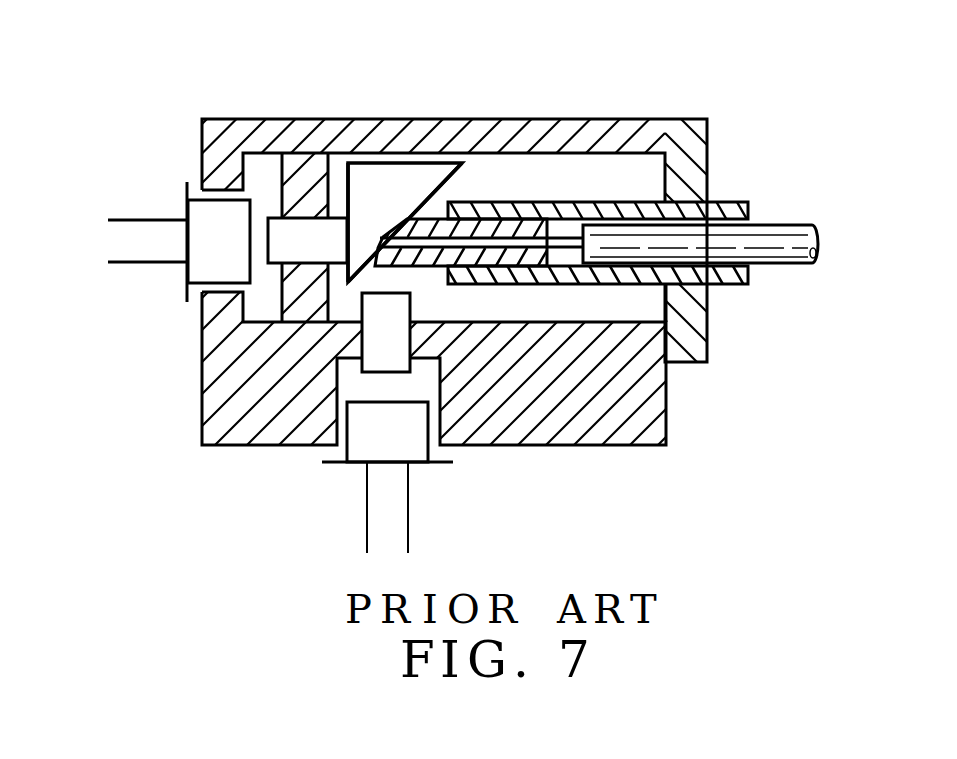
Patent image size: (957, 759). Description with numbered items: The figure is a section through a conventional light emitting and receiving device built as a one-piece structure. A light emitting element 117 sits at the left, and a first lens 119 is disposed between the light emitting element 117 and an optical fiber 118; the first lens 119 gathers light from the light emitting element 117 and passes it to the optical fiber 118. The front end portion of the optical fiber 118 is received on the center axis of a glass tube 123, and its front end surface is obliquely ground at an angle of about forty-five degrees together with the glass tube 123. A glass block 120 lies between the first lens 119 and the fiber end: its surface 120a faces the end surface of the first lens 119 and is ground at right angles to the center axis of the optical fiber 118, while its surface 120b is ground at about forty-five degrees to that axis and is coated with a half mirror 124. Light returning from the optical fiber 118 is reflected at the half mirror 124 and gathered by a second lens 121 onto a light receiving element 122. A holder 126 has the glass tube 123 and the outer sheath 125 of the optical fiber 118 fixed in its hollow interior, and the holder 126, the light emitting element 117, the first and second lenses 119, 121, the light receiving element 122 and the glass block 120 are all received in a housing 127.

The light emitting element 117 is at (213, 263).
The optical fiber 118 is at (583, 284).
The first lens 119 is at (298, 233).
The glass block 120 is at (422, 177).
The surface 120a is at (345, 177).
The surface 120b is at (462, 165).
The second lens 121 is at (378, 333).
The light receiving element 122 is at (372, 432).
The glass tube 123 is at (505, 267).
The half mirror 124 is at (455, 178).
The outer sheath 125 is at (787, 235).
The holder 126 is at (692, 355).
The housing 127 is at (510, 448).